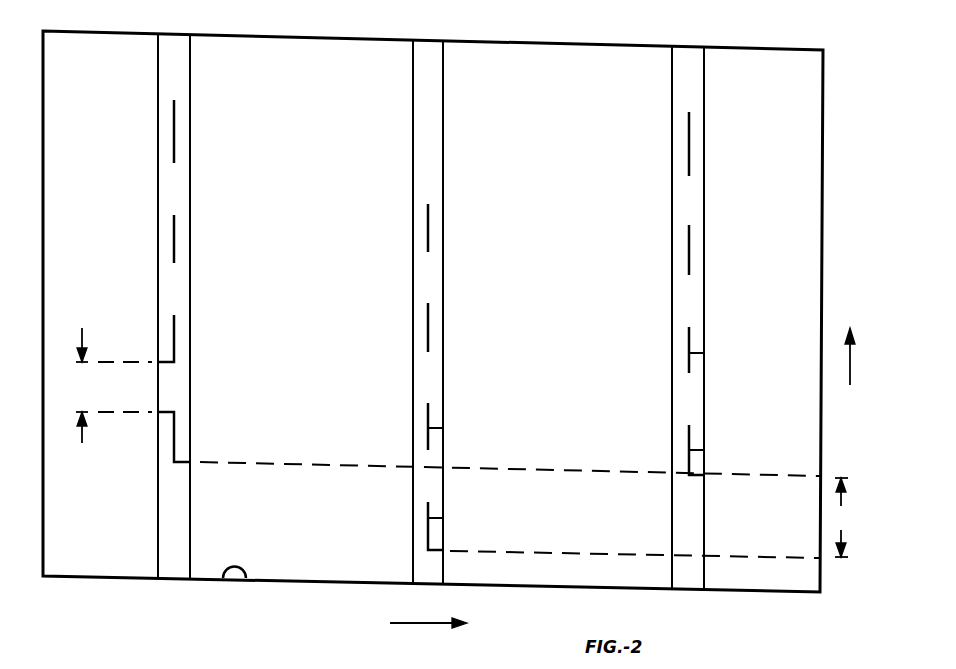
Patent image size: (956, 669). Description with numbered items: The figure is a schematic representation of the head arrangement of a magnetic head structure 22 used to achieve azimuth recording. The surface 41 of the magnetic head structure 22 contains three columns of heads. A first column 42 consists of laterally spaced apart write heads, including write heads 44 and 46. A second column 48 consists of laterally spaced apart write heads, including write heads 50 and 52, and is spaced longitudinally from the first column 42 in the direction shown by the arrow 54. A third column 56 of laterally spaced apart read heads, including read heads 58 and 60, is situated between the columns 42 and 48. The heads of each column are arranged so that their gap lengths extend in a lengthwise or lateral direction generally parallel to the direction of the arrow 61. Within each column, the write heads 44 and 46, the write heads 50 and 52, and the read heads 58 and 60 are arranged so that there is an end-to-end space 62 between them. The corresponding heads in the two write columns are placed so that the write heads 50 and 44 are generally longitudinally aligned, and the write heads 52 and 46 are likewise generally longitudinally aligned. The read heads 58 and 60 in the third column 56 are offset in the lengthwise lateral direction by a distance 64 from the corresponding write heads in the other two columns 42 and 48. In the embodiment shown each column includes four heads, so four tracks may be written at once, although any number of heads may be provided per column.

The magnetic head structure 22 is at (66, 31).
The surface 41 is at (226, 580).
The first column 42 is at (687, 68).
The write head 44 is at (704, 353).
The write head 46 is at (704, 450).
The second column 48 is at (172, 58).
The write head 50 is at (174, 334).
The write head 52 is at (166, 443).
The arrow 54 is at (428, 635).
The third column 56 is at (427, 63).
The read head 58 is at (443, 428).
The read head 60 is at (443, 518).
The arrow 61 is at (851, 372).
The end-to-end space 62 is at (111, 385).
The distance 64 is at (527, 510).